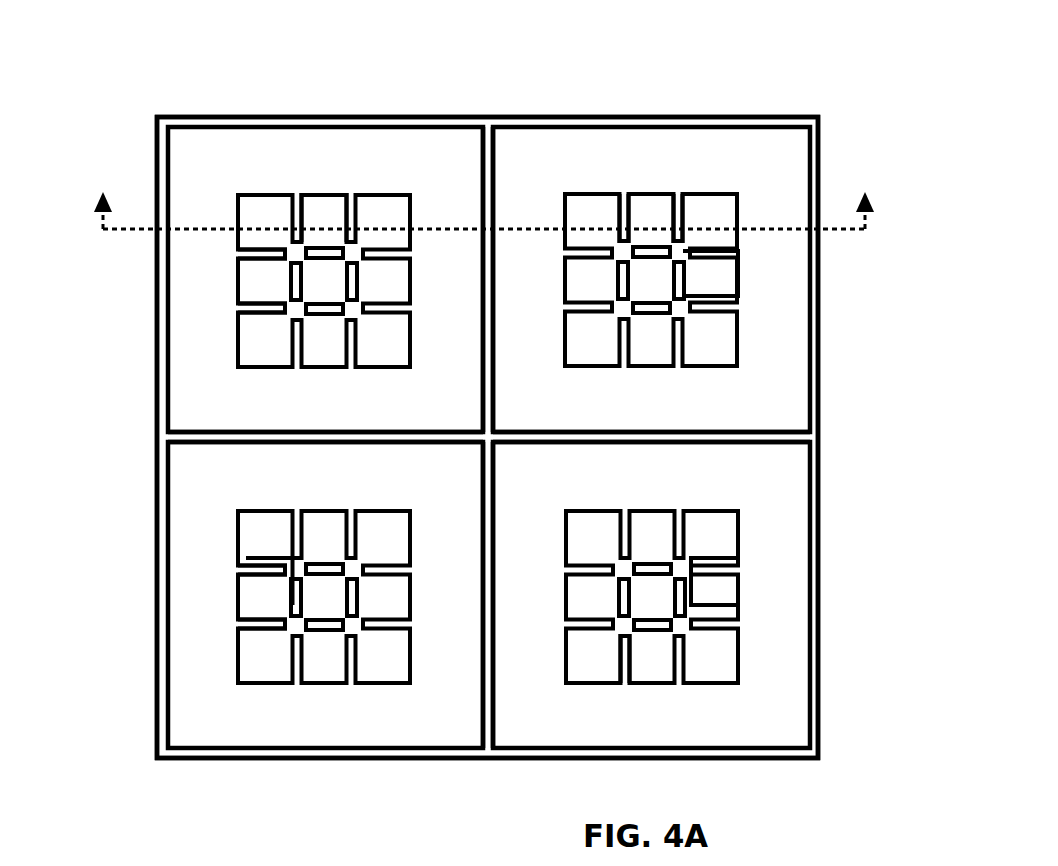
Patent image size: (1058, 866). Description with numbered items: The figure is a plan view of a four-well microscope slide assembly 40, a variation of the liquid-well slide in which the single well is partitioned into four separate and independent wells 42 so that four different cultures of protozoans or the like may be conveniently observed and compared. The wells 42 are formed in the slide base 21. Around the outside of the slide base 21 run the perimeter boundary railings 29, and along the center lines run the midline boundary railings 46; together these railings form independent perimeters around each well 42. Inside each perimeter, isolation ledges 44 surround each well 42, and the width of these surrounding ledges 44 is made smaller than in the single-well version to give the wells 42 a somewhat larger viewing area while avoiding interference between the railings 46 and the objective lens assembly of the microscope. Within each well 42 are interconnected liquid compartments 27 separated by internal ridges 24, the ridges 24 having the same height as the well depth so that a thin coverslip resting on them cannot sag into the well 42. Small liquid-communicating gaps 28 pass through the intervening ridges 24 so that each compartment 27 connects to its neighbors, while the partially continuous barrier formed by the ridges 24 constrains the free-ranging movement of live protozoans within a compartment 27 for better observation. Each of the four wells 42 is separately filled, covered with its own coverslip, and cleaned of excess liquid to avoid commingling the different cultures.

The microscope slide assembly 40 is at (800, 72).
The slide base 21 is at (253, 115).
The perimeter boundary railings 29 is at (165, 162).
The isolation ledges 44 is at (212, 167).
The midline boundary railings 46 is at (490, 182).
The wells 42 is at (273, 193).
The liquid compartments 27 is at (321, 211).
The ridges 24 is at (667, 202).
The gaps 28 is at (693, 237).